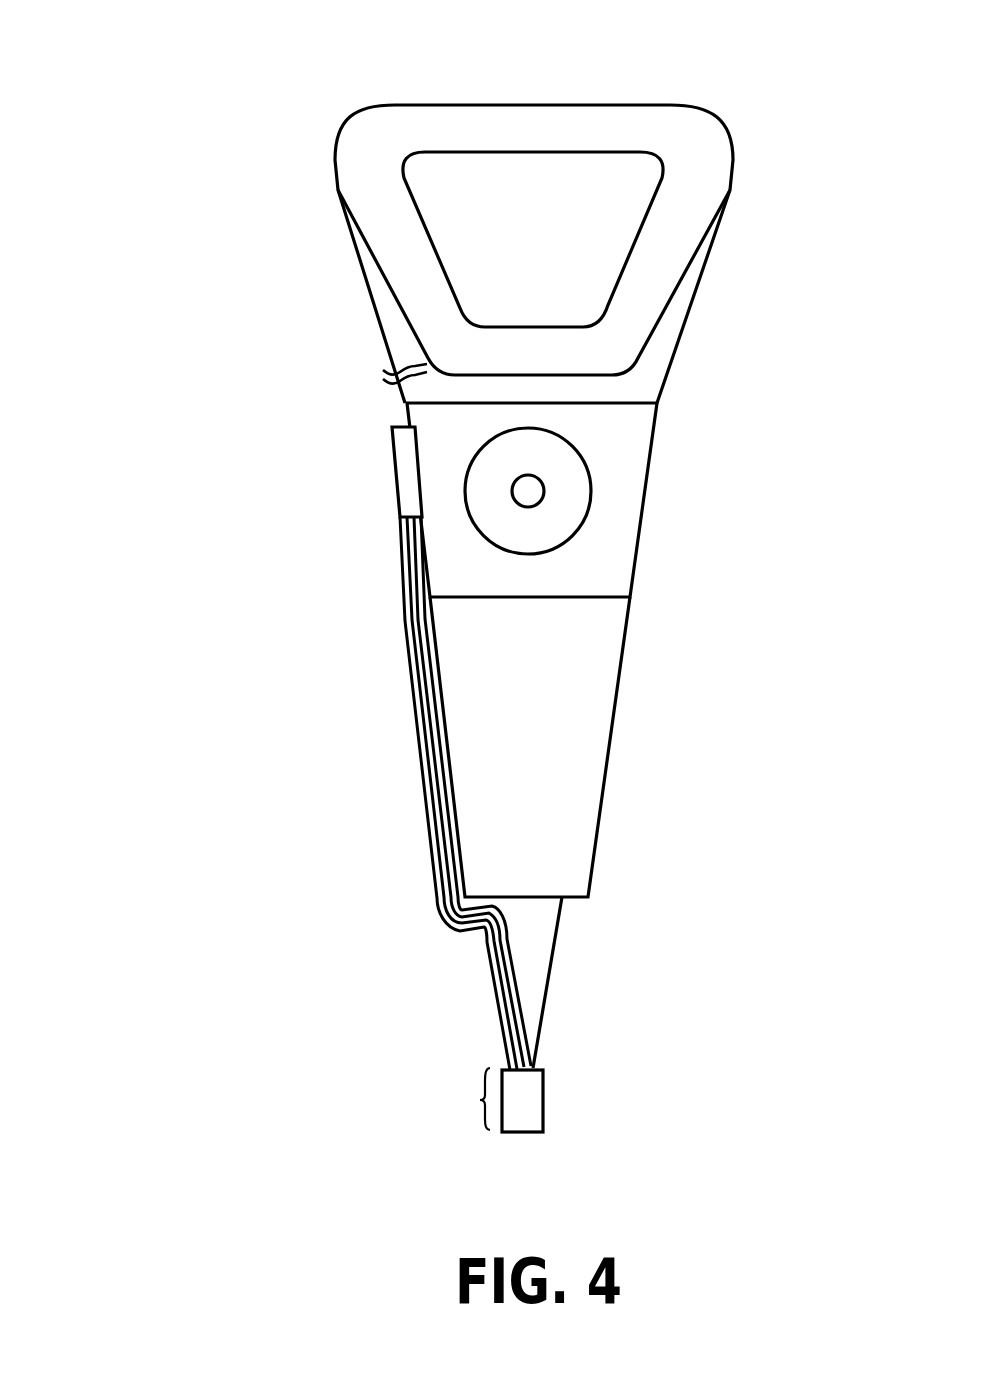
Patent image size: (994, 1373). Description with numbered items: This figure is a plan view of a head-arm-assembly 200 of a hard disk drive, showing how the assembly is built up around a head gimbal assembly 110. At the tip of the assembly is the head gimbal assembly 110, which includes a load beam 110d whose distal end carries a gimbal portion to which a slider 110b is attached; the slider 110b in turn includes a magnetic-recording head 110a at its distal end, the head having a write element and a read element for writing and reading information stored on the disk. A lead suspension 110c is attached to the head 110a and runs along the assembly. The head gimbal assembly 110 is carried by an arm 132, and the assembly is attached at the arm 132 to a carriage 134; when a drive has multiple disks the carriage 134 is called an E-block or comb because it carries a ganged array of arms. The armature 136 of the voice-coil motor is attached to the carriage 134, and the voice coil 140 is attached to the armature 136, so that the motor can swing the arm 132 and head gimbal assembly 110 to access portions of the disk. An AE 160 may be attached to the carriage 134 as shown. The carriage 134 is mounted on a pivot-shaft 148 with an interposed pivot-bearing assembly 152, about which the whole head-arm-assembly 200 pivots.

The controller assembly 200 is at (112, 83).
The voice coil 140 is at (405, 267).
The armature 136 is at (405, 347).
The AE 160 is at (407, 483).
The pivot-shaft 148 is at (528, 490).
The pivot-bearing assembly 152 is at (570, 505).
The carriage 134 is at (597, 555).
The arm 132 is at (523, 697).
The head gimbal assembly 110 is at (364, 824).
The magnetic-recording head 110a is at (423, 824).
The slider 110b is at (482, 1100).
The lead suspension 110c is at (500, 990).
The load beam 110d is at (523, 943).